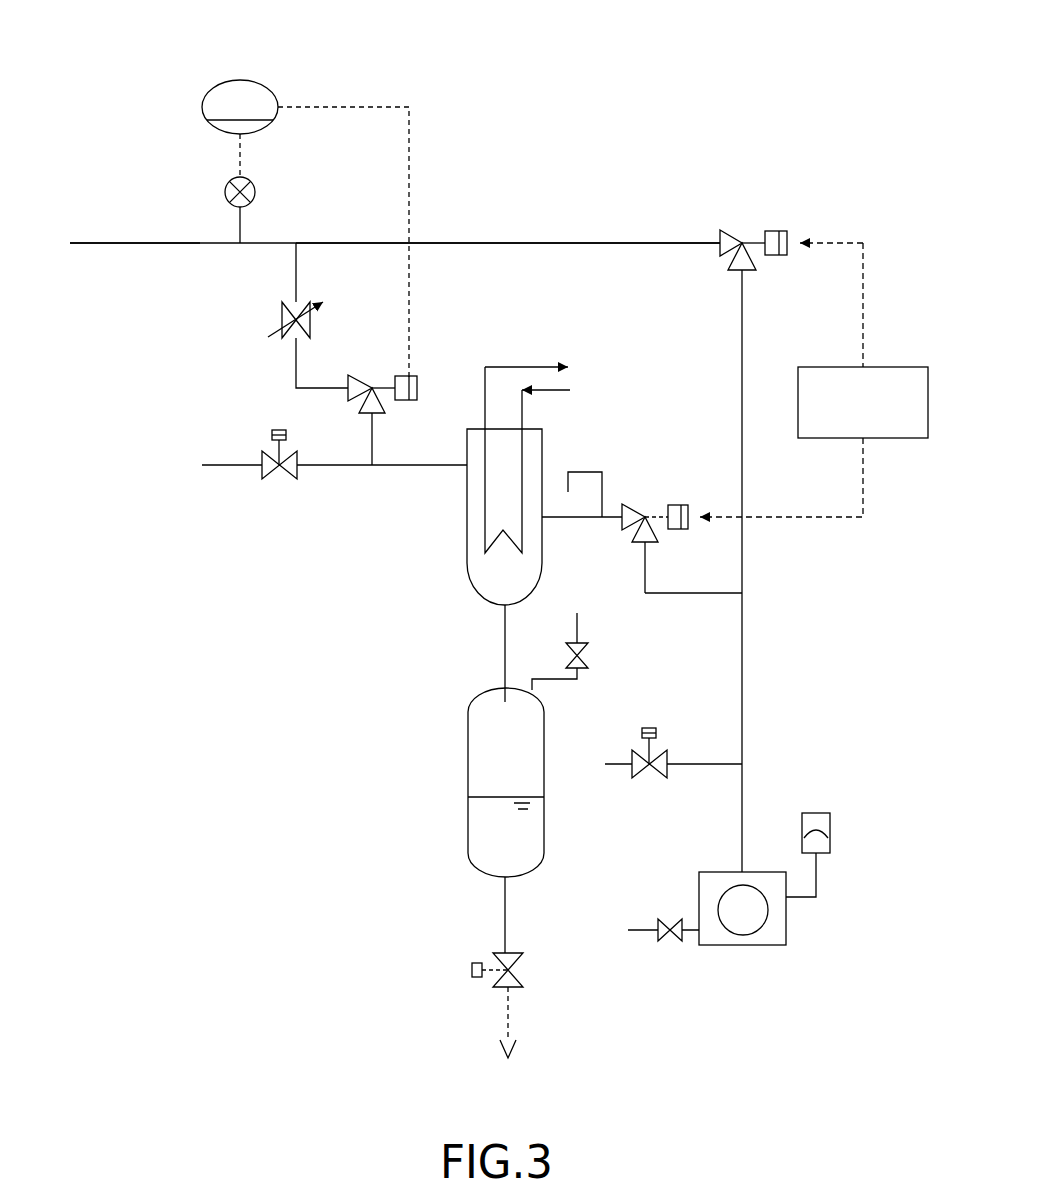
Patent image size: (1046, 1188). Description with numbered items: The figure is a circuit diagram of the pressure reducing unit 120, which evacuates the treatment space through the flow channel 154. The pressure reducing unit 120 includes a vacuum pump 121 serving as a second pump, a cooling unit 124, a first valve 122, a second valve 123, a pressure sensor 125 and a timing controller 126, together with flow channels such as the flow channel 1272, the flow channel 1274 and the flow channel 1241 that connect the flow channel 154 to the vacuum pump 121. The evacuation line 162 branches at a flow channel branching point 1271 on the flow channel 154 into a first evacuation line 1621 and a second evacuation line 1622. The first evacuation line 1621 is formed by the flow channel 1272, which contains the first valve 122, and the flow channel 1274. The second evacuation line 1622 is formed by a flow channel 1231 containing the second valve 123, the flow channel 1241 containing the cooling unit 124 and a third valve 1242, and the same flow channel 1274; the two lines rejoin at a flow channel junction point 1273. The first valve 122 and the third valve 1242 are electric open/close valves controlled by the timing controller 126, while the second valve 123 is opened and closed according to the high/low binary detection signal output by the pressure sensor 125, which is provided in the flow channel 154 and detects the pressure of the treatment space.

The pressure reducing unit 120 is at (572, 95).
The vacuum pump 121 is at (763, 946).
The first valve 122 is at (740, 240).
The second valve 123 is at (380, 383).
The cooling unit 124 is at (447, 713).
The pressure sensor 125 is at (240, 80).
The timing controller 126 is at (903, 367).
The flow channel 154 is at (135, 245).
The evacuation line 162 is at (148, 240).
The first evacuation line 1621 is at (591, 240).
The second evacuation line 1622 is at (412, 475).
The flow channel 1231 is at (292, 357).
The flow channel 1241 is at (645, 563).
The third valve 1242 is at (650, 510).
The flow channel branching point 1271 is at (296, 243).
The flow channel 1272 is at (742, 325).
The flow channel junction point 1273 is at (745, 595).
The flow channel 1274 is at (743, 735).